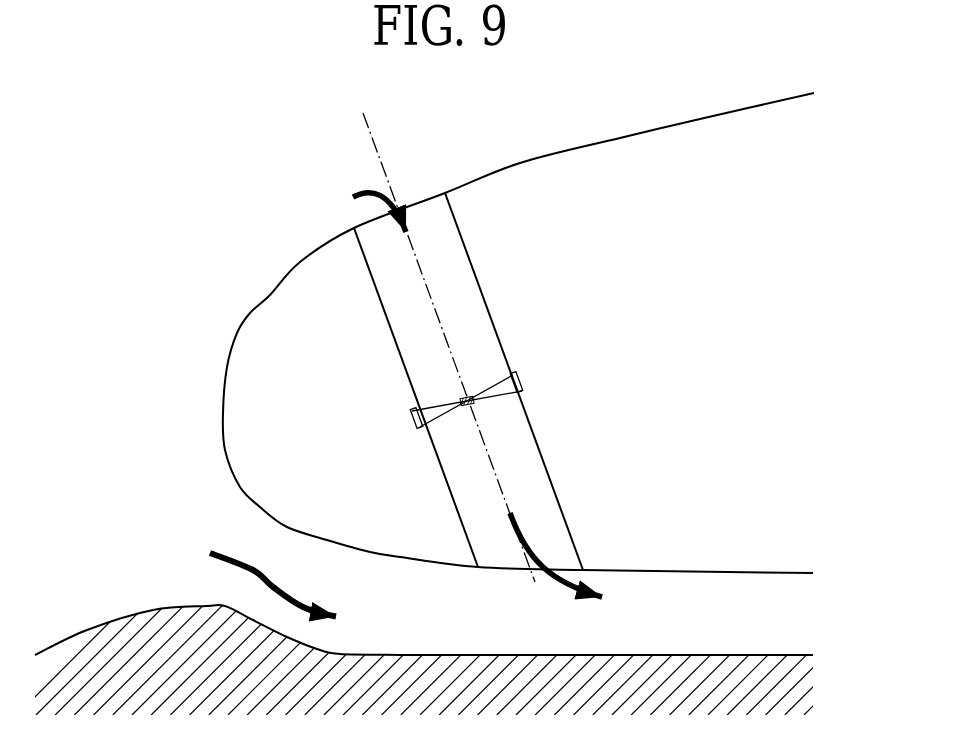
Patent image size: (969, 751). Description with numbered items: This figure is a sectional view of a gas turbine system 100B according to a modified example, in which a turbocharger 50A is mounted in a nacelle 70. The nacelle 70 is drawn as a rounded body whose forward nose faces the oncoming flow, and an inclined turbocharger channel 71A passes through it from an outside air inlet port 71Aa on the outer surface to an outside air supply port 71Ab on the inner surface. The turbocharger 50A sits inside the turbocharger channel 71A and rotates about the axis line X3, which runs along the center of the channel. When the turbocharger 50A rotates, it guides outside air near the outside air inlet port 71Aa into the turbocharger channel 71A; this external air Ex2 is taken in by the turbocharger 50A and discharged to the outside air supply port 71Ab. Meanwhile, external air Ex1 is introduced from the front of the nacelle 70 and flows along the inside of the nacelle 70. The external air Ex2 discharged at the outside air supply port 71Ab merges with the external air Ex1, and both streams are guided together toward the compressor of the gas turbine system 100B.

The gas turbine system 100B is at (184, 236).
The nacelle 70 is at (281, 281).
The turbocharger channel 71A is at (497, 336).
The outside air inlet port 71Aa is at (362, 225).
The outside air supply port 71Ab is at (558, 553).
The turbocharger 50A is at (406, 407).
The axis line X3 is at (373, 141).
The external air Ex1 is at (234, 565).
The external air Ex2 is at (372, 192).